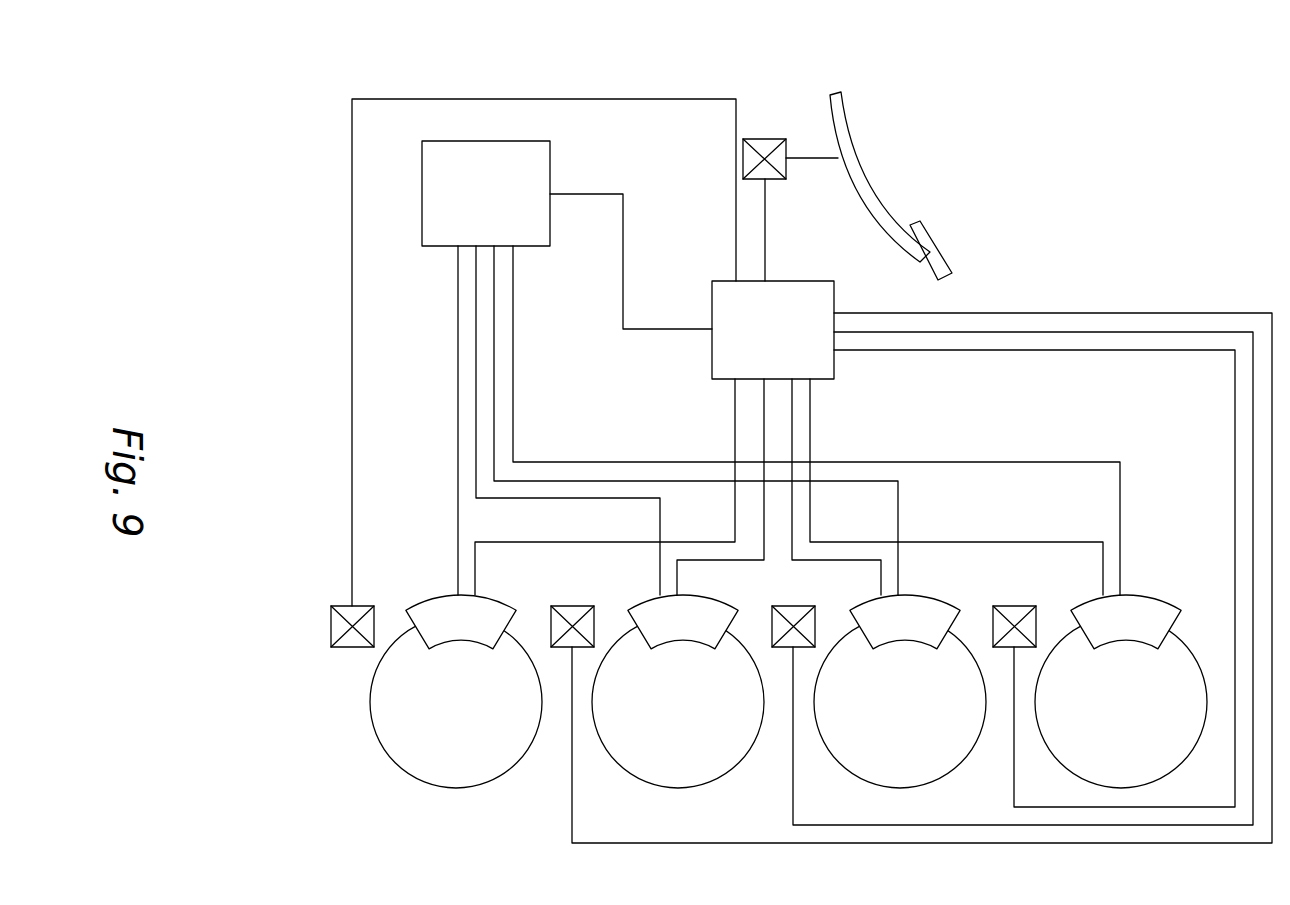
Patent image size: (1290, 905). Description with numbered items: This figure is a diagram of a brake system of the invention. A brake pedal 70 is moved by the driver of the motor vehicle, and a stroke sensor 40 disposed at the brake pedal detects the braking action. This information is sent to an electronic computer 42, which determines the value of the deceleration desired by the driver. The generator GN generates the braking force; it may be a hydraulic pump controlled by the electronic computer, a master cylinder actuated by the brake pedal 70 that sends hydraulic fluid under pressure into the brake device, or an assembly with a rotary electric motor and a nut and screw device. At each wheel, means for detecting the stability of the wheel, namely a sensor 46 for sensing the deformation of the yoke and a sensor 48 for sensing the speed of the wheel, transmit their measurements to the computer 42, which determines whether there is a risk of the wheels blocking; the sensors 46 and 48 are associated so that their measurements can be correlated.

The stroke sensor 40 is at (765, 139).
The electronic computer 42 is at (787, 281).
The sensor for sensing the deformation of the yoke 46 is at (331, 618).
The sensor for sensing the speed of the wheel 48 is at (331, 636).
The brake pedal 70 is at (868, 190).
The generator GN is at (486, 193).